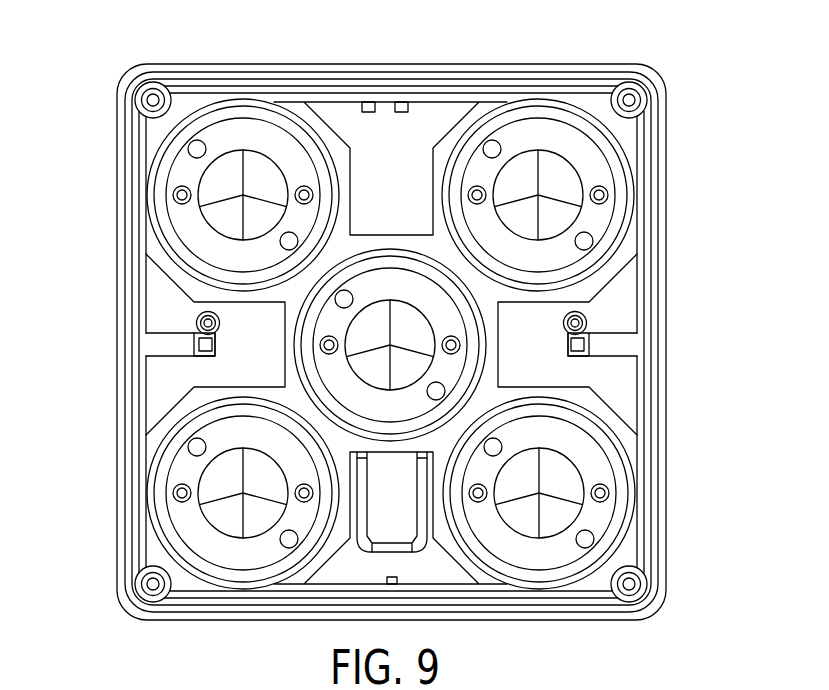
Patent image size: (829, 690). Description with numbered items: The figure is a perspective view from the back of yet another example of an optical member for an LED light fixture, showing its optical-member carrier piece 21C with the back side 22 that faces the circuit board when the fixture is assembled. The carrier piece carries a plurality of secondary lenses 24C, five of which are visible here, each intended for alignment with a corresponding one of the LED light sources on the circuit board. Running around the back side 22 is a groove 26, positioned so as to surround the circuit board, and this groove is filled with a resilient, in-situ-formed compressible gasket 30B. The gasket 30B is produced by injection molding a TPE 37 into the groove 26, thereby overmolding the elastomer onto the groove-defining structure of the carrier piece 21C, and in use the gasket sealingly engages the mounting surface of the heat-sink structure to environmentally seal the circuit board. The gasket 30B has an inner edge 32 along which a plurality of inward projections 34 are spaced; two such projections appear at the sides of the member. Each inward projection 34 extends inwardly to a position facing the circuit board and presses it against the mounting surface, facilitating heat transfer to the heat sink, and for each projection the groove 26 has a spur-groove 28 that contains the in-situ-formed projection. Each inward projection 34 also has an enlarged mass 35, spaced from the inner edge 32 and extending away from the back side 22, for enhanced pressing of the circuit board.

The optical-member carrier piece 21C is at (440, 573).
The back side 22 is at (166, 291).
The secondary lenses 24C is at (392, 292).
The groove 26 is at (641, 300).
The spur-groove 28 is at (185, 333).
The in-situ-formed compressible gasket 30B is at (641, 233).
The inner edge 32 is at (150, 155).
The inward projections 34 is at (166, 345).
The enlarged mass 35 is at (200, 343).
The TPE 37 is at (232, 93).